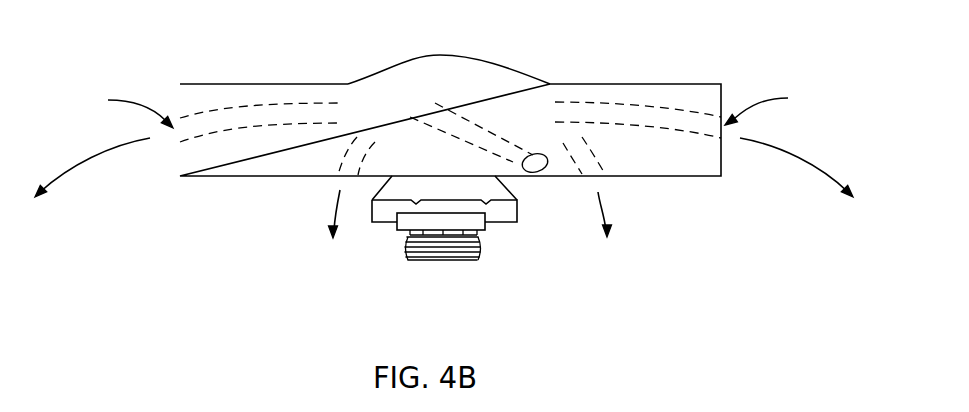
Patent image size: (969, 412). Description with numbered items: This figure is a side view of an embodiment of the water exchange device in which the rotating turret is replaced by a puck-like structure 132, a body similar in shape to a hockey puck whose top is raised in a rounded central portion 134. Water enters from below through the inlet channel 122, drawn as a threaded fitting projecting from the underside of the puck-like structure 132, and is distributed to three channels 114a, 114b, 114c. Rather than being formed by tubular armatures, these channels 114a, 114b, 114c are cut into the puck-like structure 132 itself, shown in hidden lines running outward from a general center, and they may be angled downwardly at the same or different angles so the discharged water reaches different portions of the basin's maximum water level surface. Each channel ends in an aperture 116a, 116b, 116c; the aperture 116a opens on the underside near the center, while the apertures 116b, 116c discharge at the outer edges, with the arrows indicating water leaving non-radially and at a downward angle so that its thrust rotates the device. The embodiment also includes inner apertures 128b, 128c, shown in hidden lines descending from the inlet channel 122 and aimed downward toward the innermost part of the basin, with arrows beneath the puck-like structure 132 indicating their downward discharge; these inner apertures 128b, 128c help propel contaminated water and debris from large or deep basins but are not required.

The puck-like structure 132 is at (692, 162).
The rounded central portion 134 is at (390, 80).
The channel 114a is at (478, 140).
The channel 114b is at (648, 112).
The channel 114c is at (272, 117).
The aperture 116a is at (538, 172).
The aperture 116b is at (789, 141).
The aperture 116c is at (104, 140).
The inner aperture 128b is at (602, 170).
The inner aperture 128c is at (343, 170).
The inlet channel 122 is at (470, 252).